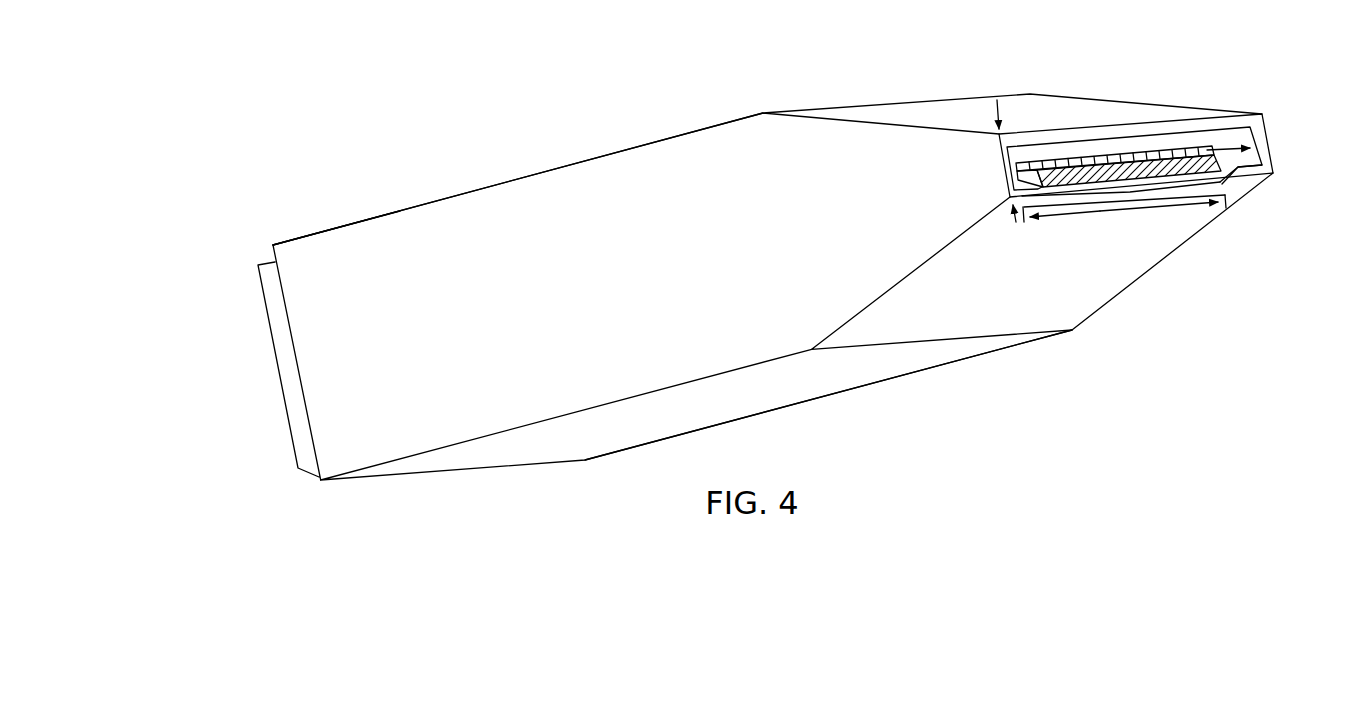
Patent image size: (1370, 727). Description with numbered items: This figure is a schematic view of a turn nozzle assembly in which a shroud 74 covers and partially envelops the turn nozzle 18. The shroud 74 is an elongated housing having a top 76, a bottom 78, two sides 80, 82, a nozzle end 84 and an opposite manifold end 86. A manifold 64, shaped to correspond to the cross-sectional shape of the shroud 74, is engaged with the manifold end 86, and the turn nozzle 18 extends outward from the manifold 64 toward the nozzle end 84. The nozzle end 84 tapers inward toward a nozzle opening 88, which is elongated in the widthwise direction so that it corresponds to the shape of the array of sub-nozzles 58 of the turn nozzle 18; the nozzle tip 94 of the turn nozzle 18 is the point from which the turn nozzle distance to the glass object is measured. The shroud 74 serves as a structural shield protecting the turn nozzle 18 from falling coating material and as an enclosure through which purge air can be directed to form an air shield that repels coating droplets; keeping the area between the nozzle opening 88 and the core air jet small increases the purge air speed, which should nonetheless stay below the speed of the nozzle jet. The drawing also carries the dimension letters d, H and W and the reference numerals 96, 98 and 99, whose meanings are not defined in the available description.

The manifold 64 is at (265, 411).
The shroud 74 is at (483, 178).
The top 76 is at (553, 170).
The side 80 is at (356, 232).
The manifold end 86 is at (473, 484).
The bottom 78 is at (826, 378).
The side 82 is at (962, 364).
The nozzle end 84 is at (1277, 127).
The nozzle tip 94 is at (1050, 150).
The sub-nozzles 58 is at (1125, 155).
The nozzle opening 88 is at (1000, 173).
The turn nozzle 18 is at (1175, 138).
The gap distance d is at (1206, 150).
The height H is at (995, 107).
The width W is at (1106, 208).
The ledge 98 is at (1040, 214).
The ledge edge 96 is at (1178, 196).
The ledge end 99 is at (1236, 188).